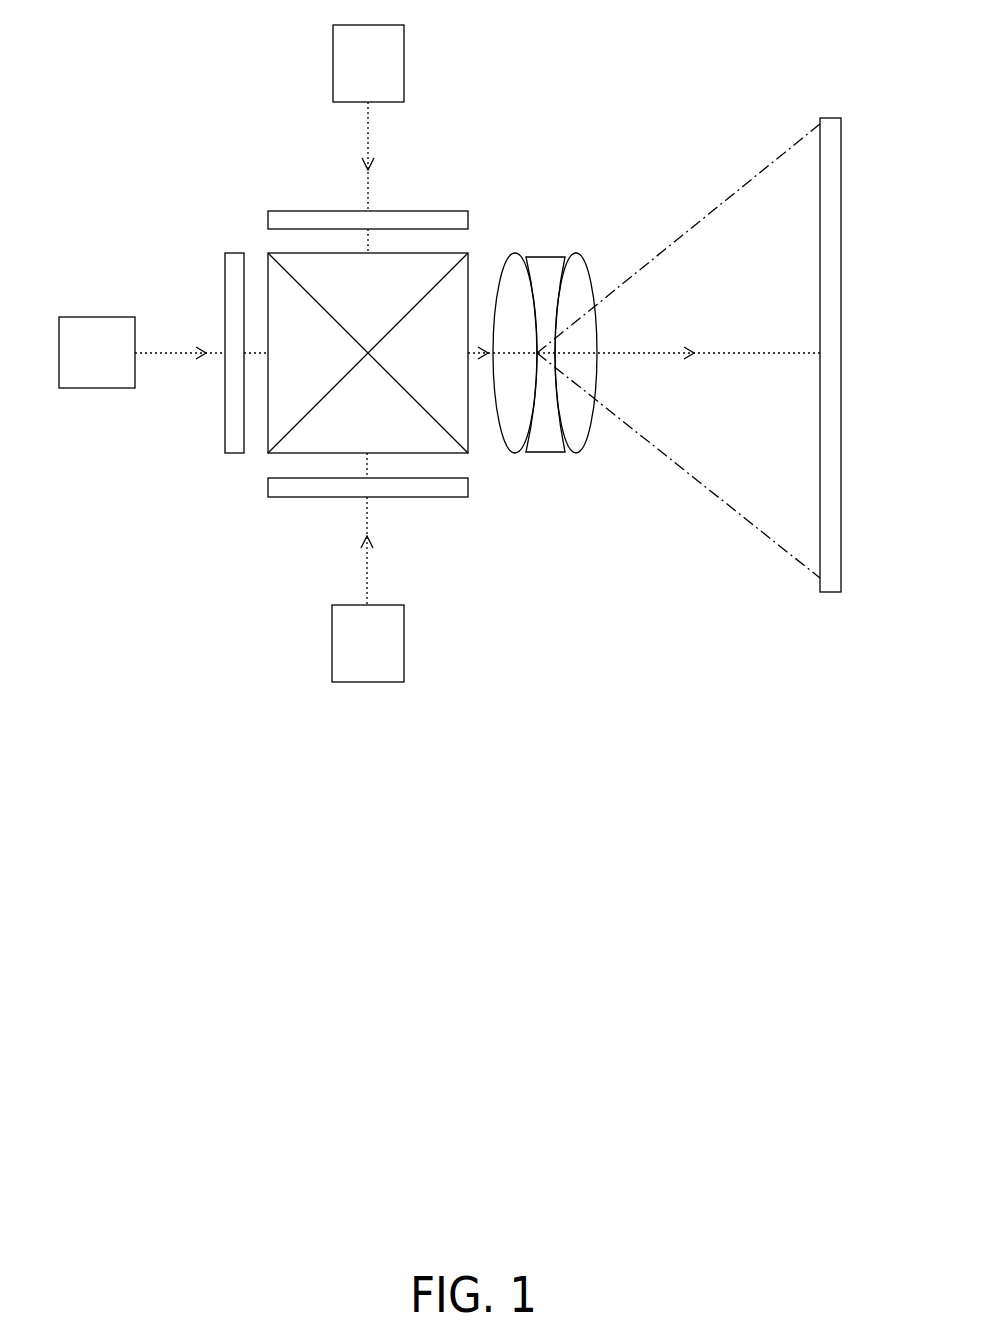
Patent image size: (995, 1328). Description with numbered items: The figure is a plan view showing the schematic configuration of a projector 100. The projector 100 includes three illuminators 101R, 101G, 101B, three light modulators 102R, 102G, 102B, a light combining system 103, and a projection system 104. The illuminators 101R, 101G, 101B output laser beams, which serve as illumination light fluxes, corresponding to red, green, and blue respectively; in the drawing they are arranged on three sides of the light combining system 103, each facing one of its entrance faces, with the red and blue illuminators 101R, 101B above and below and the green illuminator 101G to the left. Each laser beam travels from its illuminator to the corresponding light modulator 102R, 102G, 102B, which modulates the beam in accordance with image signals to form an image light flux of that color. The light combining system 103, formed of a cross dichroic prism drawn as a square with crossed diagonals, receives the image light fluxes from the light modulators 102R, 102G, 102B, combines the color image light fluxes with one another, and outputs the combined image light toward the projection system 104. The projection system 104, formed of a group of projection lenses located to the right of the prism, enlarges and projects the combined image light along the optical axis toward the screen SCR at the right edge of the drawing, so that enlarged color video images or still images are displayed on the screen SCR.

The projector 100 is at (162, 83).
The illuminator 101R is at (340, 62).
The illuminator 101G is at (97, 323).
The illuminator 101B is at (340, 645).
The light modulator 102R is at (270, 218).
The light modulator 102G is at (233, 437).
The light modulator 102B is at (267, 488).
The light combining system 103 is at (457, 420).
The projection system 104 is at (595, 243).
The screen SCR is at (829, 118).